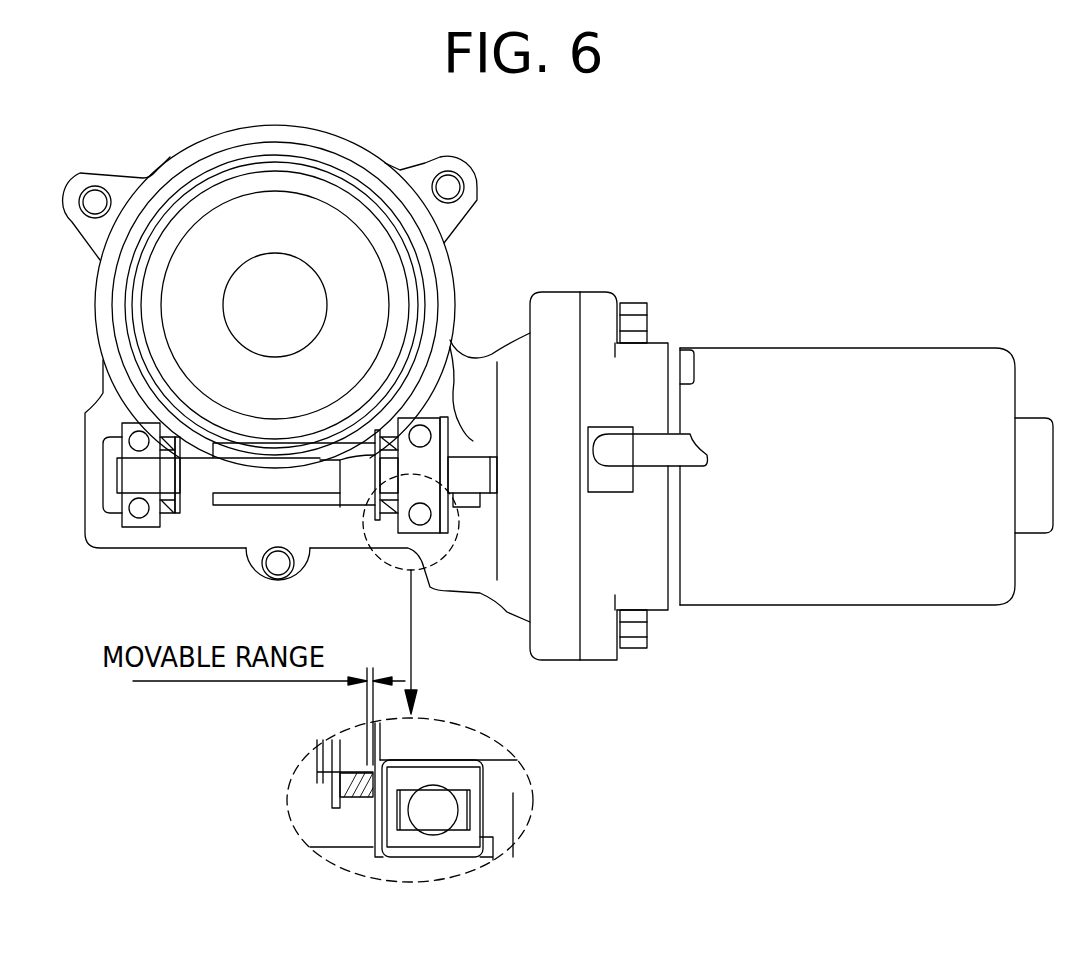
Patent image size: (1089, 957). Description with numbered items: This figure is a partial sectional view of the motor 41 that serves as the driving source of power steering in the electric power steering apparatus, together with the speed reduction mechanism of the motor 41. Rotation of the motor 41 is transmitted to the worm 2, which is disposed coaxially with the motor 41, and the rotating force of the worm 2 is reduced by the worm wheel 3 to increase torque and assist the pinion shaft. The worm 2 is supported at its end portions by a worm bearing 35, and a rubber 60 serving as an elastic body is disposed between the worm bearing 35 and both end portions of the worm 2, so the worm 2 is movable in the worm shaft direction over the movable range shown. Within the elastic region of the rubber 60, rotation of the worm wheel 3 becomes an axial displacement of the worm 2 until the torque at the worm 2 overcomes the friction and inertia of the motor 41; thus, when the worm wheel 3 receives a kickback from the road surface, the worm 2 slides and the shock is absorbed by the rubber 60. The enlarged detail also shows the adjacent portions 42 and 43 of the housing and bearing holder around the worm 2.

The worm 2 is at (240, 502).
The worm wheel 3 is at (380, 275).
The worm bearing 35 is at (437, 857).
The motor 41 is at (830, 348).
The gear housing neck 42 is at (480, 444).
The bearing holder 43 is at (487, 777).
The rubber 60 is at (170, 518).